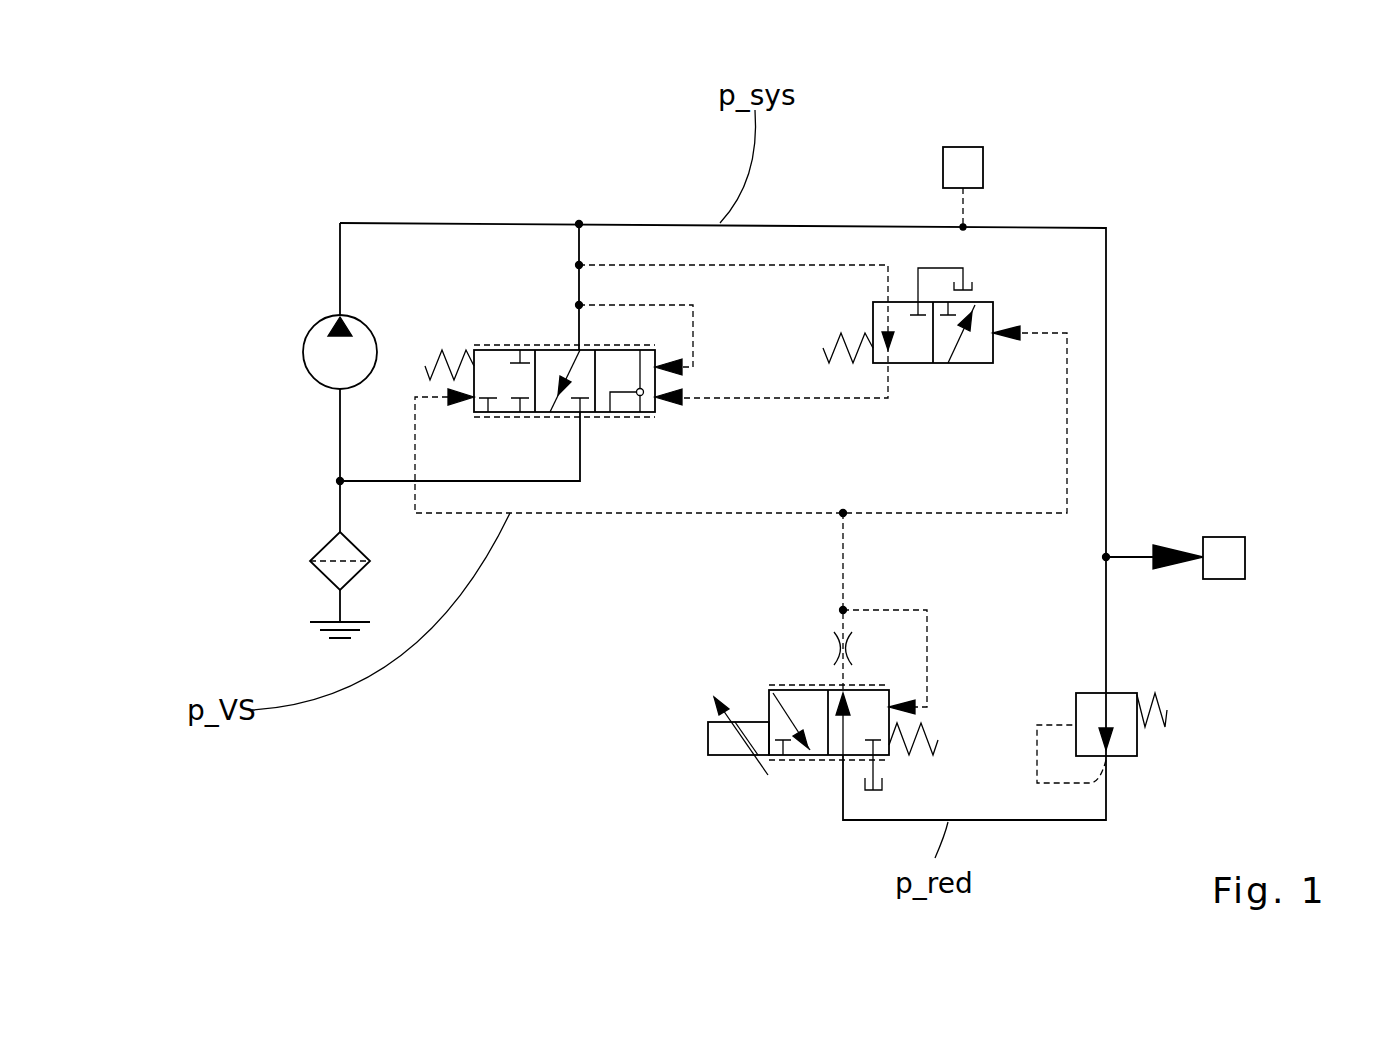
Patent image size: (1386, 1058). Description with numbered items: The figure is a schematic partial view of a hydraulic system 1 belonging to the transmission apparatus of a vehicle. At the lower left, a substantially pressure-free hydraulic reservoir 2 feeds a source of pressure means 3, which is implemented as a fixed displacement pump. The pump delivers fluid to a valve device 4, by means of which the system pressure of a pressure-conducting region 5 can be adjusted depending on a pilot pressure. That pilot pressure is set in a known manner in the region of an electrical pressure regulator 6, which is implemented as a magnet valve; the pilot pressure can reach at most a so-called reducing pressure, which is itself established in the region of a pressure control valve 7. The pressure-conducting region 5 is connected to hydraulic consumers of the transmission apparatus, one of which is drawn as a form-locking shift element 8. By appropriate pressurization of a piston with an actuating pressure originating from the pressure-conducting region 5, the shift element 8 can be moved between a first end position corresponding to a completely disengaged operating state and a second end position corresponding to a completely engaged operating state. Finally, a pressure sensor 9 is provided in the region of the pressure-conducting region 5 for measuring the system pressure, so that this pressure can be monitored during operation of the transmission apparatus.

The hydraulic system 1 is at (1161, 273).
The hydraulic reservoir 2 is at (322, 633).
The source of pressure means 3 is at (310, 330).
The valve device 4 is at (700, 470).
The pressure-conducting region 5 is at (1022, 228).
The electrical pressure regulator 6 is at (802, 762).
The pressure control valve 7 is at (1120, 688).
The form-locking shift element 8 is at (1223, 545).
The pressure sensor 9 is at (953, 150).